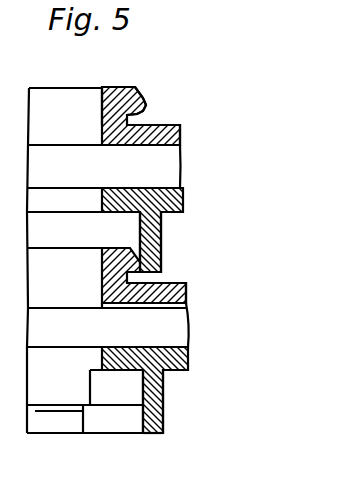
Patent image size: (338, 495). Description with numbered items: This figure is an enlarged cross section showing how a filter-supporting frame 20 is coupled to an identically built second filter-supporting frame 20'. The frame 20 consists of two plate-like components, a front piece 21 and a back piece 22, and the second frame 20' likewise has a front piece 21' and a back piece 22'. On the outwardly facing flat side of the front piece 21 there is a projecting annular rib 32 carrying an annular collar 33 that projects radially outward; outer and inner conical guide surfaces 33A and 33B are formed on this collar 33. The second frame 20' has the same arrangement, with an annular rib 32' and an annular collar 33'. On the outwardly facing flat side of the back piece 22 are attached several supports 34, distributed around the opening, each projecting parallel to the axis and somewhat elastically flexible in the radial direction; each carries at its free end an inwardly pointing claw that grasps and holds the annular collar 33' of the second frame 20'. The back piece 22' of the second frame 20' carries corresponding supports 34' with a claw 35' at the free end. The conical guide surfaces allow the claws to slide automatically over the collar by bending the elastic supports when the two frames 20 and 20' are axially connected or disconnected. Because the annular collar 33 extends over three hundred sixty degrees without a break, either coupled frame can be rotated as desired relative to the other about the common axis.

The filter-supporting frame 20 is at (238, 163).
The second filter-supporting frame 20' is at (241, 325).
The front piece 21 is at (165, 143).
The front piece 21' is at (169, 295).
The back piece 22 is at (140, 222).
The back piece 22' is at (143, 390).
The annular rib 32 is at (110, 89).
The annular rib 32' is at (142, 290).
The annular collar 33 is at (143, 109).
The annular collar 33' is at (84, 230).
The outer conical guide surface 33A is at (140, 97).
The inner conical guide surface 33B is at (143, 112).
The support 34 is at (176, 242).
The support 34' is at (179, 401).
The claw 35' is at (153, 451).